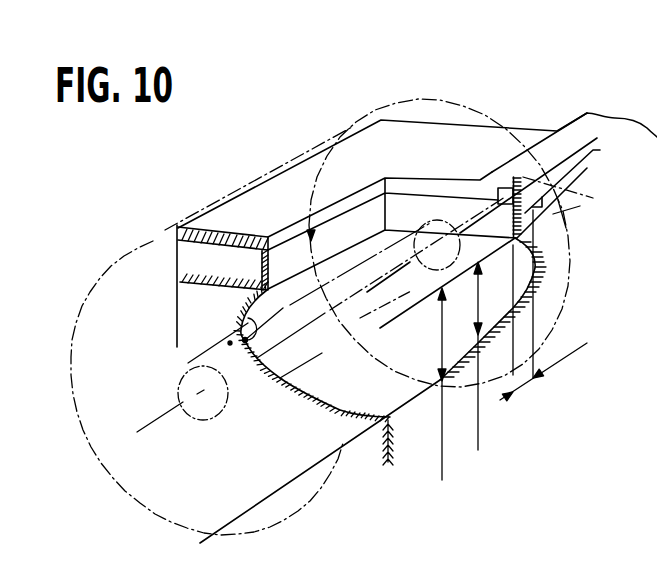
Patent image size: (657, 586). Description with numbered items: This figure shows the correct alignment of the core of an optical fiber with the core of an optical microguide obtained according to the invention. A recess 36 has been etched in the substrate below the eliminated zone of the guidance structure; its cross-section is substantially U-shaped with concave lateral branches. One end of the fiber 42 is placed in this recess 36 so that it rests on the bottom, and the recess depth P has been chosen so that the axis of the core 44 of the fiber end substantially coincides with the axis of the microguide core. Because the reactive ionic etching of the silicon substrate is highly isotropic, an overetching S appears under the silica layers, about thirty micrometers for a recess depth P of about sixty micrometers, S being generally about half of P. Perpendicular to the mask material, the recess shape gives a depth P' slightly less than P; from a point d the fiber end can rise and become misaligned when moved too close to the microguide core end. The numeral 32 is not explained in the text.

The axis of rotation 32 is at (506, 188).
The recess 36 is at (243, 340).
The optical fiber 42 is at (165, 229).
The core of the fiber 44 is at (422, 232).
The recess depth P is at (451, 395).
The depth P' is at (492, 362).
The overetching S is at (558, 359).
The point d is at (440, 383).